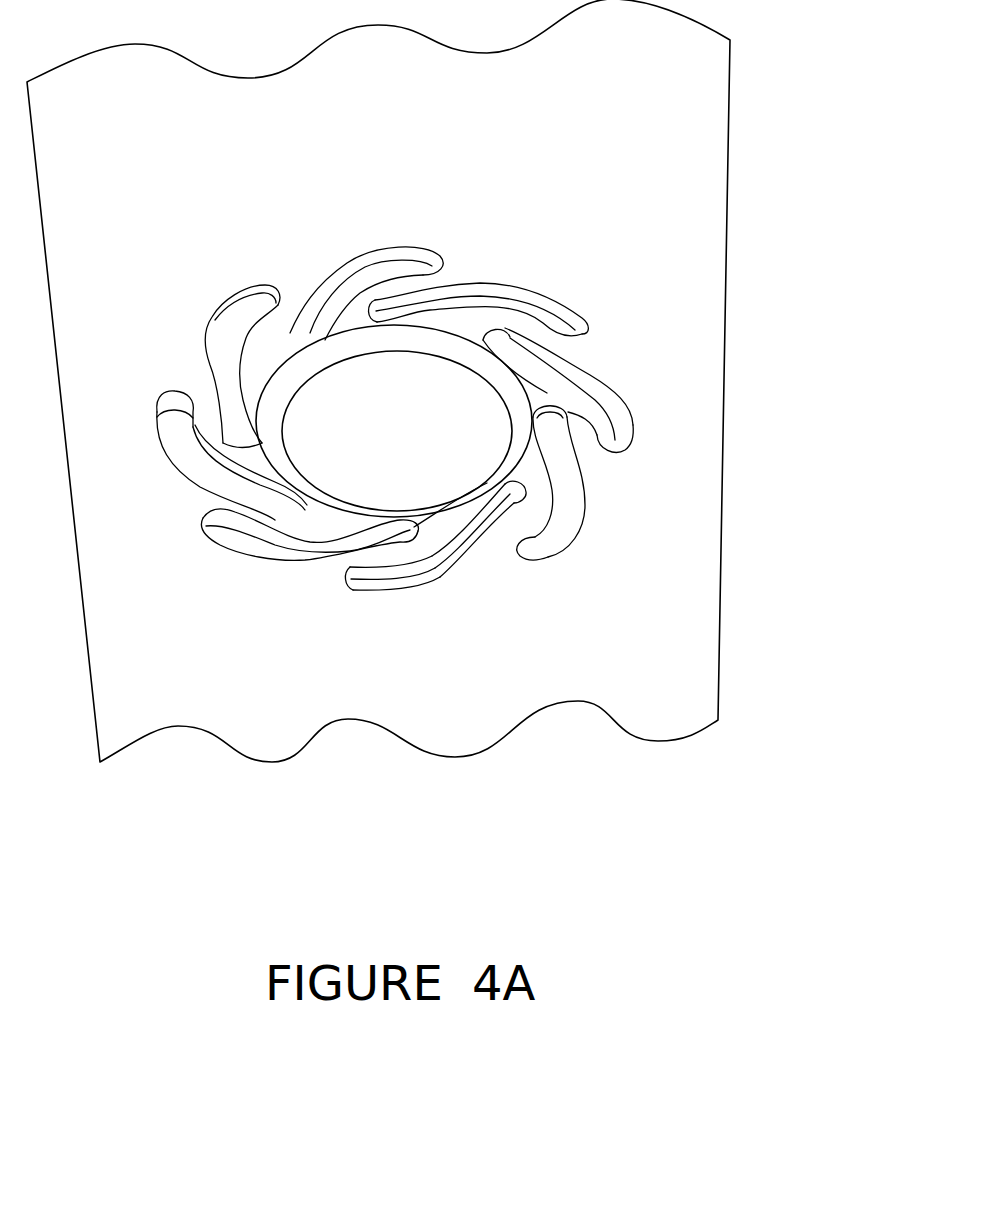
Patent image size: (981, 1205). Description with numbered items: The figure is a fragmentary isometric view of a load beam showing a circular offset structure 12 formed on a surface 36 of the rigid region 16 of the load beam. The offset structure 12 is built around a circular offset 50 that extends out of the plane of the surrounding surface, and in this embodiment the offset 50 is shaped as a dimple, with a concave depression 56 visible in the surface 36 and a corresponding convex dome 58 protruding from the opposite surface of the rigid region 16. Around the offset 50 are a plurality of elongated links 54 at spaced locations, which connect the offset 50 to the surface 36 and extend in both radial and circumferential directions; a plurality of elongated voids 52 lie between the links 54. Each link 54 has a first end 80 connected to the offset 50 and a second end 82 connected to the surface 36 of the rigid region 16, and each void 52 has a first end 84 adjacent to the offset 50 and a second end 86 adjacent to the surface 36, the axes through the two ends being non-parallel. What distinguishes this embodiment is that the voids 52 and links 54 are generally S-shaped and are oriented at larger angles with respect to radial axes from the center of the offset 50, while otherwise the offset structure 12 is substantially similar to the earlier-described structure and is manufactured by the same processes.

The circular offset structure 12 is at (410, 381).
The rigid region 16 is at (410, 381).
The surface 36 is at (684, 72).
The circular offset 50 is at (480, 403).
The elongated voids 52 is at (610, 397).
The elongated links 54 is at (413, 552).
The concave depression 56 is at (480, 332).
The convex dome 58 is at (352, 548).
The first end of link 80 is at (260, 368).
The second end of link 82 is at (298, 303).
The first end of void 84 is at (295, 514).
The second end of void 86 is at (204, 512).